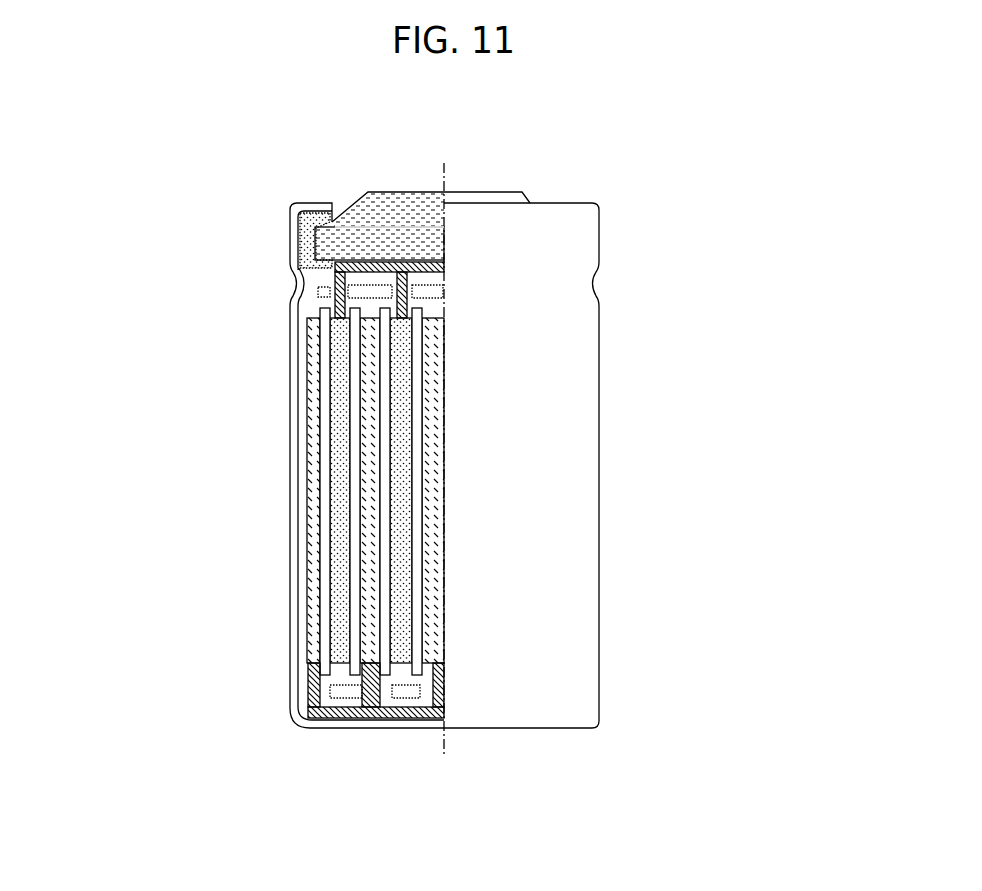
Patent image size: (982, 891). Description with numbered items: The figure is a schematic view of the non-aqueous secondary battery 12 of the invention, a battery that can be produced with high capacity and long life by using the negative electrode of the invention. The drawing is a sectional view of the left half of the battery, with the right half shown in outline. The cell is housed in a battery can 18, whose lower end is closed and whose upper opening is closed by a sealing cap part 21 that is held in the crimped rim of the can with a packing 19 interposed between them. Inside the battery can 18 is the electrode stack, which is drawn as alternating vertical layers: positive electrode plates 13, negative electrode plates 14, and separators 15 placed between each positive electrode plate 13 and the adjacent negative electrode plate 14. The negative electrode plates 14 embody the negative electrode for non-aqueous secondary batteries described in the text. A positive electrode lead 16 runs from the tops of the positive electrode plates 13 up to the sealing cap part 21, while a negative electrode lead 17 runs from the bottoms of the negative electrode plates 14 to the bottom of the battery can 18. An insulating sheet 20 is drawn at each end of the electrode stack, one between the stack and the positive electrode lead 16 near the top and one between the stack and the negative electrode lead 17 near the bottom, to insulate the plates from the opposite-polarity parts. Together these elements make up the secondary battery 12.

The secondary battery 12 is at (632, 204).
The positive electrode plate 13 is at (403, 663).
The negative electrode plate 14 is at (307, 572).
The separator 15 is at (352, 672).
The positive electrode lead 16 is at (315, 243).
The negative electrode lead 17 is at (340, 718).
The battery can 18 is at (292, 487).
The packing 19 is at (330, 207).
The insulating sheet 20 is at (318, 292).
The sealing cap part 21 is at (498, 192).